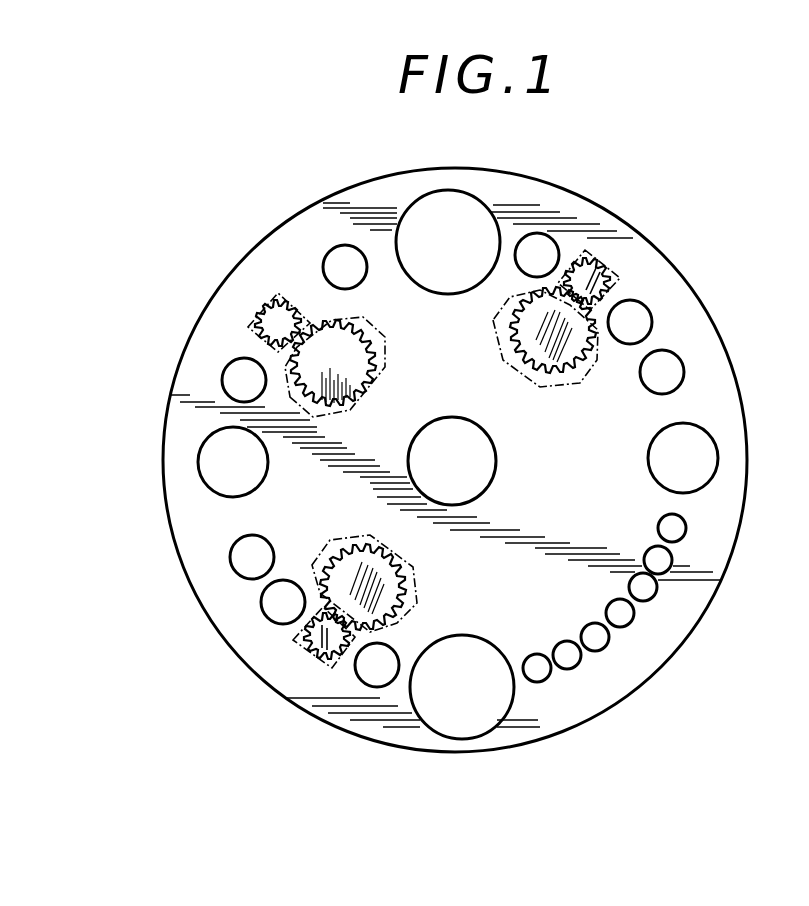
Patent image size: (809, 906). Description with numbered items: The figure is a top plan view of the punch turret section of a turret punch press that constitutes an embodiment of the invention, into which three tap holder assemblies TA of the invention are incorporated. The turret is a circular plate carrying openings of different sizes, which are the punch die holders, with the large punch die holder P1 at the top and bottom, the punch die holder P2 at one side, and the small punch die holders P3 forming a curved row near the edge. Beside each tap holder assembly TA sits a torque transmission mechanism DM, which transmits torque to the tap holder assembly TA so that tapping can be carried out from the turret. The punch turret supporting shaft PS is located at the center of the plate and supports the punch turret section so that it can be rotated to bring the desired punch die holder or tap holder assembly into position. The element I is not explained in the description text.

The first pulley P1 is at (497, 778).
The second pulley P2 is at (718, 460).
The third pulleys P3 is at (632, 623).
The pivot shaft PS is at (412, 458).
The drive motor DM is at (363, 323).
The tension adjuster TA is at (273, 297).
The index disc I is at (643, 423).